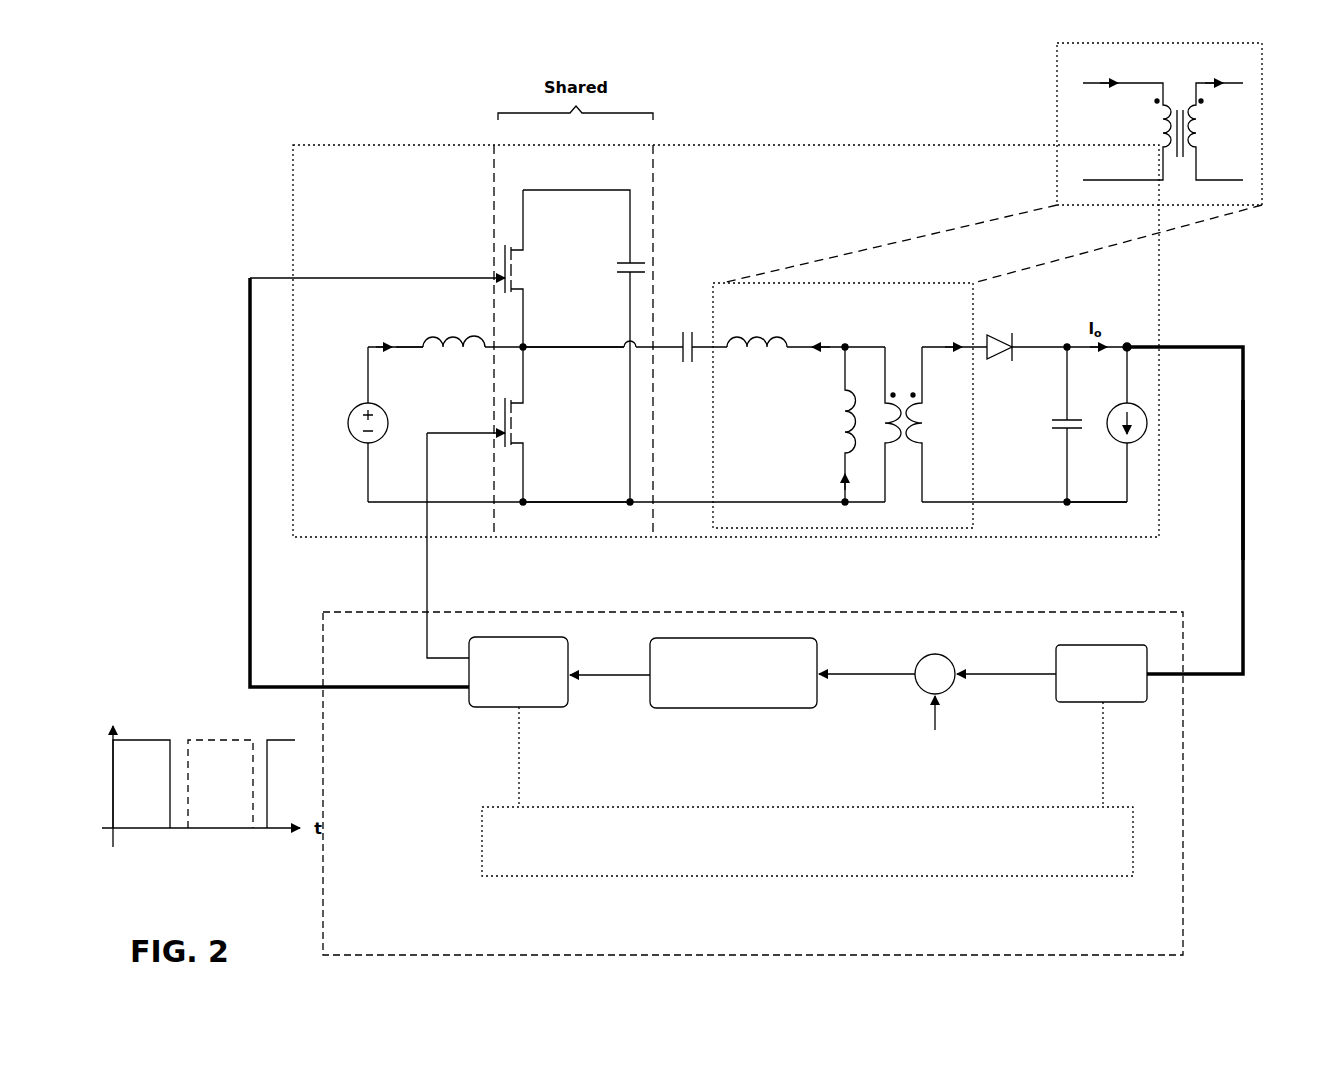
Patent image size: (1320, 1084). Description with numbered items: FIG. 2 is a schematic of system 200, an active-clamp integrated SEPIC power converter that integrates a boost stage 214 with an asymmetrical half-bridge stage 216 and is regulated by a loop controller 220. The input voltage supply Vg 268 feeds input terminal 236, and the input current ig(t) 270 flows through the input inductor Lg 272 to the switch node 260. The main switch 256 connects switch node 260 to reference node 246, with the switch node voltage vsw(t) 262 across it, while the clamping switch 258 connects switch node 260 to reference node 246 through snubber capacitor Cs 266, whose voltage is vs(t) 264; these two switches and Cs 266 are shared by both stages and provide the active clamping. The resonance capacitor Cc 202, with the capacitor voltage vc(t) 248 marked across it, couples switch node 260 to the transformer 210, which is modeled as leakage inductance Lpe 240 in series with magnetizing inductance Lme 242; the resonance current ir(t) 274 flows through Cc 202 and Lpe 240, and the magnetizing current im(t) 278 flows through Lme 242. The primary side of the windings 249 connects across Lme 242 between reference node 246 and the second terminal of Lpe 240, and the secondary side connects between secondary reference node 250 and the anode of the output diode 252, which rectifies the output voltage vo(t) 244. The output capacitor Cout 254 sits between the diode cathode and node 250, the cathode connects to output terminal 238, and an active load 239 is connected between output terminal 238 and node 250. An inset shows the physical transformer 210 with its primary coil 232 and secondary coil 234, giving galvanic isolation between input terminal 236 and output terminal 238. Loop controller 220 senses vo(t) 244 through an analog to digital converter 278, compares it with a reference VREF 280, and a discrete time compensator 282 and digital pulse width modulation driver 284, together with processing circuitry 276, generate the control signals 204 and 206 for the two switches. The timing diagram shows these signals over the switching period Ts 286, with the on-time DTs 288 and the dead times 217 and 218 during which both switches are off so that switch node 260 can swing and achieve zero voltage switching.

The system 200 is at (236, 118).
The resonance capacitor Cc 202 is at (669, 324).
The control signal c1(t) 204 is at (113, 714).
The control signal c2(t) 206 is at (253, 735).
The transformer 210 is at (1166, 202).
The boost stage 214 is at (372, 199).
The asymmetrical half-bridge stage 216 is at (865, 222).
The dead time DT1 217 is at (180, 738).
The dead time DT2 218 is at (256, 832).
The loop controller 220 is at (641, 944).
The primary coil 232 is at (1127, 131).
The secondary coil 234 is at (1219, 131).
The input terminal 236 is at (416, 355).
The output terminal 238 is at (1133, 344).
The load 239 is at (1143, 405).
The leakage inductance Lpe 240 is at (734, 328).
The magnetizing inductance Lme 242 is at (794, 433).
The output voltage vo(t) 244 is at (1258, 510).
The reference node 246 is at (527, 507).
The capacitor voltage vc(t) 248 is at (673, 410).
The windings 249 is at (843, 405).
The secondary reference node 250 is at (1072, 508).
The output diode D3 252 is at (1003, 321).
The output capacitor Cout 254 is at (1006, 458).
The main switch Q1 256 is at (962, 333).
The clamping switch Q2 258 is at (1014, 411).
The switch node 260 is at (558, 343).
The switch node voltage vsw(t) 262 is at (546, 444).
The voltage vs(t) 264 is at (592, 240).
The capacitor Cs 266 is at (580, 296).
The input voltage supply Vg 268 is at (314, 447).
The input current ig(t) 270 is at (374, 333).
The input inductor Lg 272 is at (438, 328).
The resonance current 274 is at (798, 328).
The processing circuitry 276 is at (793, 862).
The analog to digital converter 278 is at (1034, 718).
The reference voltage VREF 280 is at (921, 778).
The discrete time compensator 282 is at (748, 708).
The digital pulse width modulation driver 284 is at (570, 706).
The period Ts 286 is at (254, 879).
The on-time DTs 288 is at (156, 879).